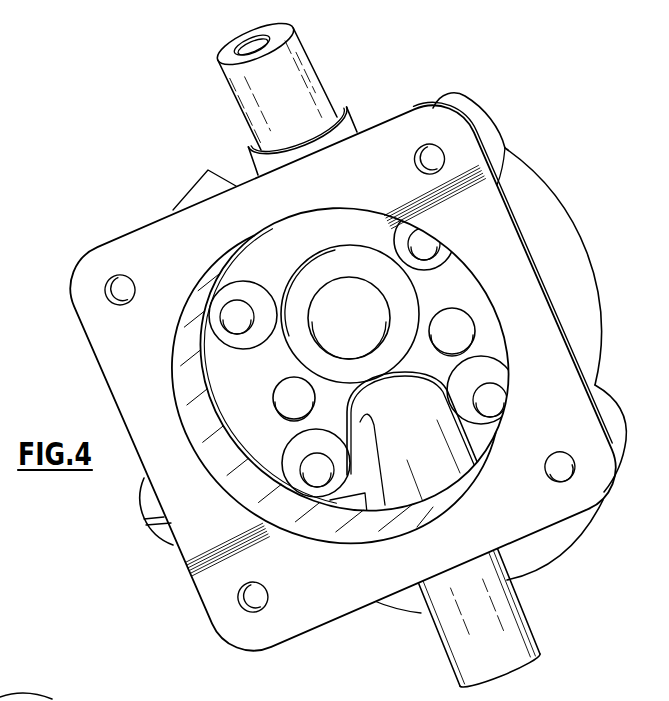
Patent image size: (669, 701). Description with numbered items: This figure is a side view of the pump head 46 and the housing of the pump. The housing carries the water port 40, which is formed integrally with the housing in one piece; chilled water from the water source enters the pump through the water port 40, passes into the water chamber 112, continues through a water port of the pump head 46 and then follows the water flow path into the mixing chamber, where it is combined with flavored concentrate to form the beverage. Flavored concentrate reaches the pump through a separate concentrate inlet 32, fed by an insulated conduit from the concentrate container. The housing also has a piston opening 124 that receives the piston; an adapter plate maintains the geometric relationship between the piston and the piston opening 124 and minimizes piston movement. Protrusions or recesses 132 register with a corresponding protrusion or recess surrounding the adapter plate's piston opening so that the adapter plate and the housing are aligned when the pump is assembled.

The concentrate inlet 32 is at (290, 68).
The water port 40 is at (473, 625).
The pump head 46 is at (561, 238).
The water chamber 112 is at (397, 472).
The piston opening 124 is at (337, 287).
The protrusions or recesses 132 is at (224, 305).